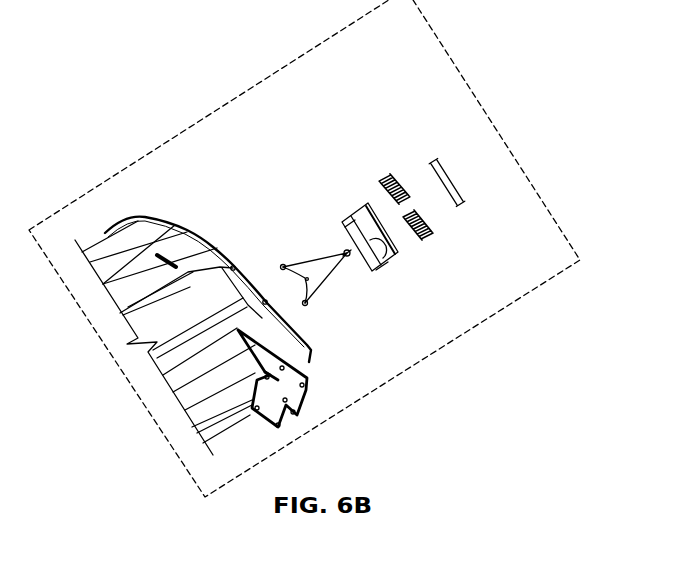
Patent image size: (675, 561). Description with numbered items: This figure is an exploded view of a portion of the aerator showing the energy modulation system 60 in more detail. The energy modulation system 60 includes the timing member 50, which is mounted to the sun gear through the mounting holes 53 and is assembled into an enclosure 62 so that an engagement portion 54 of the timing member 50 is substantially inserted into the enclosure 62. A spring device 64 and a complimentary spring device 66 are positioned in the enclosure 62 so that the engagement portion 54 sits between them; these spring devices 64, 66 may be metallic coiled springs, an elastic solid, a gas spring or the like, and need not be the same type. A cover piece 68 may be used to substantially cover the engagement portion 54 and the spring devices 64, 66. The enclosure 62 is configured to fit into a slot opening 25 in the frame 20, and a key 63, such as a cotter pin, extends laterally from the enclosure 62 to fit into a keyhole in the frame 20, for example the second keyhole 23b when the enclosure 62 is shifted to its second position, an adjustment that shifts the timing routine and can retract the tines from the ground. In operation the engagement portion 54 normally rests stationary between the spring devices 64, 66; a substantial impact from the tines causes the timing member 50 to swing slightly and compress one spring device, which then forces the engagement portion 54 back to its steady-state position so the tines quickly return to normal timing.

The frame 20 is at (107, 241).
The second keyhole 23b is at (233, 263).
The slot opening 25 is at (115, 307).
The timing member 50 is at (322, 257).
The mounting holes 53 is at (283, 267).
The engagement portion 54 is at (348, 256).
The energy modulation system 60 is at (382, 132).
The enclosure 62 is at (360, 204).
The key 63 is at (402, 258).
The spring device 64 is at (432, 232).
The complimentary spring device 66 is at (388, 174).
The cover piece 68 is at (450, 181).